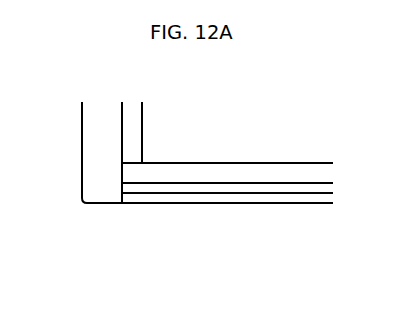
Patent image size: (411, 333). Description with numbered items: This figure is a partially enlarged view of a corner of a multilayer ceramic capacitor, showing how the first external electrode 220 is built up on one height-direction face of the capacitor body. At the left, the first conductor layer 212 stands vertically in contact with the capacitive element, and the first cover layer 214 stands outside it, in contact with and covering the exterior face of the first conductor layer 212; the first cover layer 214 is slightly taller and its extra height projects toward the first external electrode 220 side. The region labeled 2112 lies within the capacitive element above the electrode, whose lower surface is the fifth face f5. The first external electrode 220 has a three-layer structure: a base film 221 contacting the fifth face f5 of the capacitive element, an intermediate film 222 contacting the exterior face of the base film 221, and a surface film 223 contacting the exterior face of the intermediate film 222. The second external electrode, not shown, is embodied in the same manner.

The first conductor layer 212 is at (132, 118).
The first cover layer 214 is at (103, 148).
The upper region 2112 is at (313, 125).
The fifth face f5 is at (315, 163).
The first external electrode 220 is at (158, 262).
The base film 221 is at (177, 175).
The intermediate film 222 is at (222, 188).
The surface film 223 is at (268, 199).